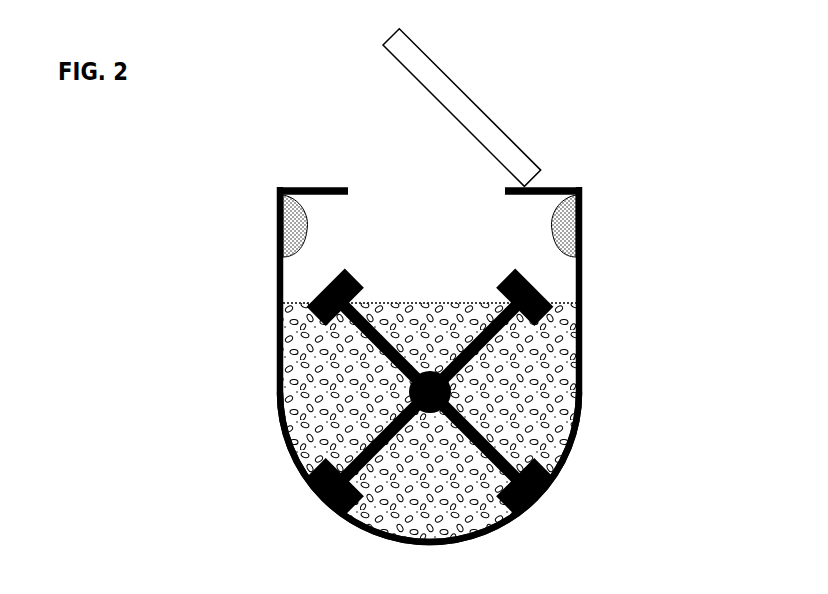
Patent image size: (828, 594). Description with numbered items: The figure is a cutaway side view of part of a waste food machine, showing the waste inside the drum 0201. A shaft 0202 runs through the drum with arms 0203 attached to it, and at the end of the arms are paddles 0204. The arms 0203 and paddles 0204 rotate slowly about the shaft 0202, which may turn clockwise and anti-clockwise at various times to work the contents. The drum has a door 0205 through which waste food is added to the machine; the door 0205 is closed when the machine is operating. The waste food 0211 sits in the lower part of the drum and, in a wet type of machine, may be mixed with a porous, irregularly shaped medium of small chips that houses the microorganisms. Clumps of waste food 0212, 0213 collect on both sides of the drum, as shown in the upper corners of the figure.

The reaction vessel 0201 is at (264, 292).
The shaft 0202 is at (398, 393).
The arms 0203 is at (491, 430).
The paddles 0204 is at (569, 470).
The door 0205 is at (481, 92).
The waste food 0211 is at (573, 370).
The clump of waste food 0212 is at (586, 230).
The clump of waste food 0213 is at (268, 230).